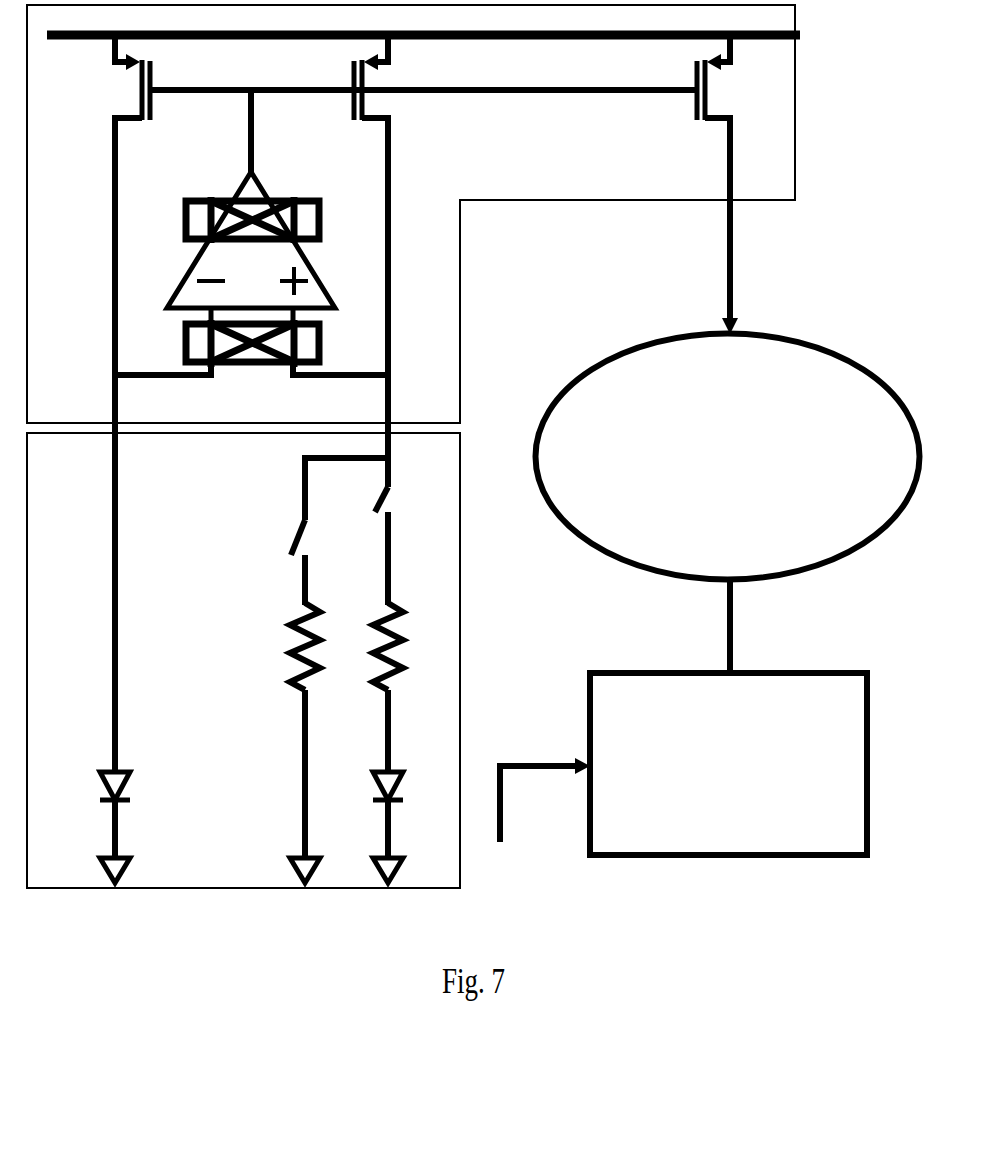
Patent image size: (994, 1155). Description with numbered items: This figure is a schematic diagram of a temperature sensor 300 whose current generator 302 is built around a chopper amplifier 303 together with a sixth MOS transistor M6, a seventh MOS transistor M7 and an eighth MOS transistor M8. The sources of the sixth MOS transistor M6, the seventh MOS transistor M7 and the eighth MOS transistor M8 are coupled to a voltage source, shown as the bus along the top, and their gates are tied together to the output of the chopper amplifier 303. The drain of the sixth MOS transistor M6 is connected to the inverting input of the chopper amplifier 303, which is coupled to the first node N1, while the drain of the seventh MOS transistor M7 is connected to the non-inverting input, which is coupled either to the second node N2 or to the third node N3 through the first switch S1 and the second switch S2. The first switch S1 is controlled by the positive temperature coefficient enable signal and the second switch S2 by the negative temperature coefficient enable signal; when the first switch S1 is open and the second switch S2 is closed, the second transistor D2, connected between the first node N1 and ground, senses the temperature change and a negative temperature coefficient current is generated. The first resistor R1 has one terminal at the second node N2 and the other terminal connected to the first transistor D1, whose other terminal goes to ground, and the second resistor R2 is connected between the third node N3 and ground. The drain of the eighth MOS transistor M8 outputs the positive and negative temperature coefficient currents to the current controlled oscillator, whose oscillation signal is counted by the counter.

The temperature sensor 300 is at (895, 92).
The current generator 302 is at (461, 291).
The chopper amplifier 303 is at (165, 278).
The sixth MOS transistor M6 is at (118, 89).
The seventh MOS transistor M7 is at (398, 90).
The eighth MOS transistor M8 is at (685, 89).
The first node N1 is at (88, 455).
The second node N2 is at (405, 312).
The third node N3 is at (319, 479).
The first switch S1 is at (397, 546).
The second switch S2 is at (314, 562).
The first resistor R1 is at (408, 687).
The second resistor R2 is at (278, 730).
The first transistor D1 is at (408, 815).
The second transistor D2 is at (135, 815).